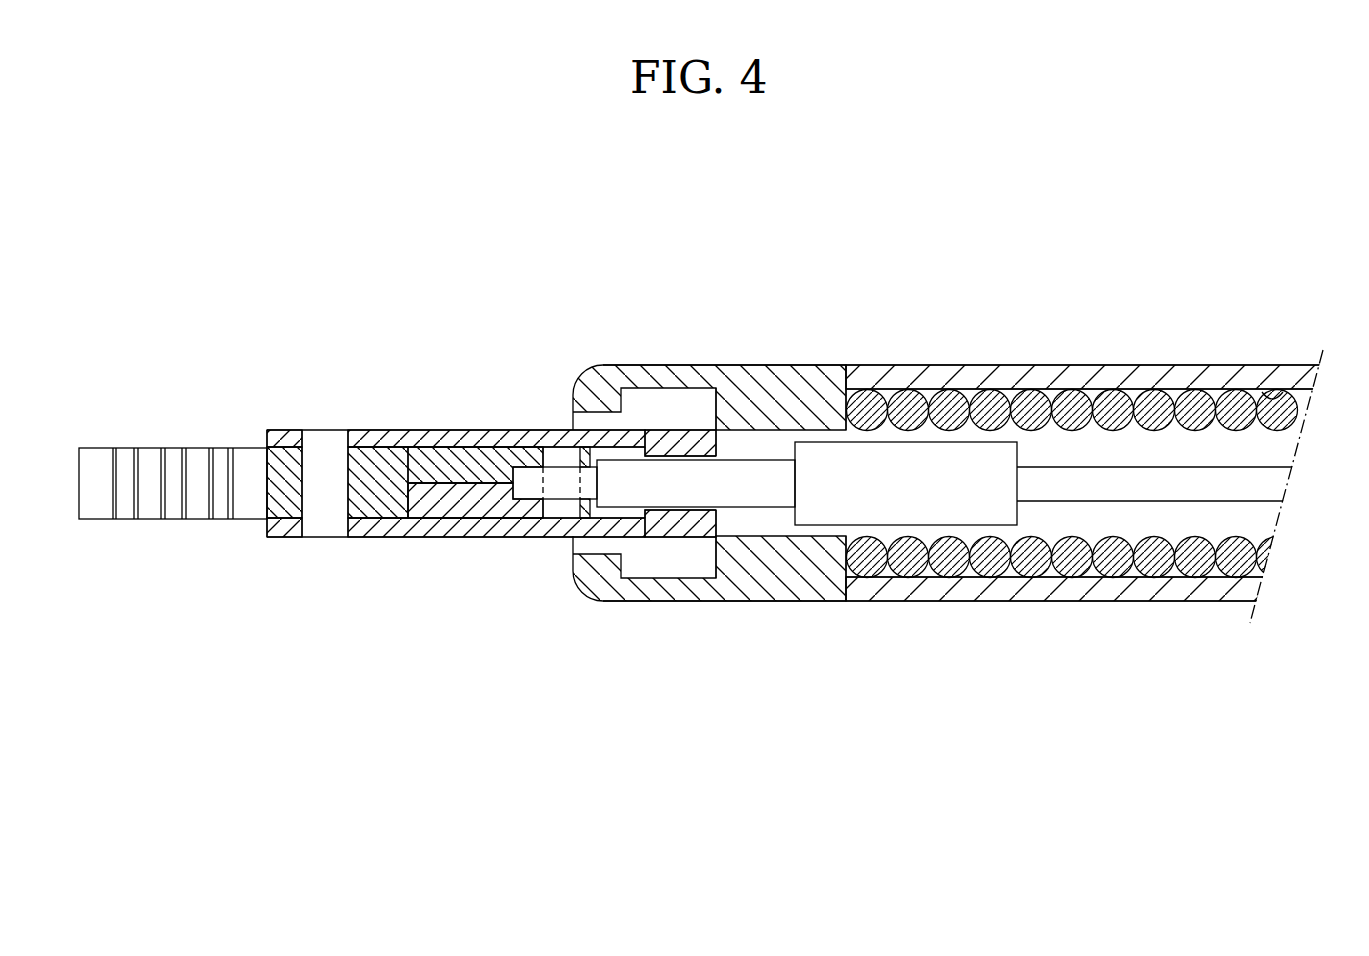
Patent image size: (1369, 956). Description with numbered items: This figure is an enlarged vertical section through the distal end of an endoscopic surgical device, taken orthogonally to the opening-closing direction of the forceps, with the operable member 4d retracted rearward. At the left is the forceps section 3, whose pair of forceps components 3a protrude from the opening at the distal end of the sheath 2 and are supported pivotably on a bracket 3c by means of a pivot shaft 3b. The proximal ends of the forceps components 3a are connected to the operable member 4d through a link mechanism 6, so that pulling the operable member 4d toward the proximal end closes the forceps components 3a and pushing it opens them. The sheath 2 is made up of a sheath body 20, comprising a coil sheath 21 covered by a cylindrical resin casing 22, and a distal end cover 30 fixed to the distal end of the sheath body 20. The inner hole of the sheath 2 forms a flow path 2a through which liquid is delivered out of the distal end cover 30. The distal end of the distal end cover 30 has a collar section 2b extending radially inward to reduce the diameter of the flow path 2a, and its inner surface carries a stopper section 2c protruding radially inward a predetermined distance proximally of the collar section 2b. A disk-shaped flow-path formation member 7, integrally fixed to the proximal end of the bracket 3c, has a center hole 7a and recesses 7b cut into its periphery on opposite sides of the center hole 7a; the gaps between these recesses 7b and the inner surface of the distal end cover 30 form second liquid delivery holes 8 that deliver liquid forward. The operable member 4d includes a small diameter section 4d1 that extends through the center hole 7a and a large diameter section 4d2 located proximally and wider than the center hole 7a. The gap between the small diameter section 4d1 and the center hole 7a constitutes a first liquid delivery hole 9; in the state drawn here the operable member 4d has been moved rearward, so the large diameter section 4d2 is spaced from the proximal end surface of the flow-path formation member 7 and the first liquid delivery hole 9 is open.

The sheath 2 is at (1246, 281).
The flow path 2a is at (1287, 365).
The collar section 2b is at (636, 388).
The stopper section 2c is at (714, 417).
The forceps section 3 is at (461, 324).
The forceps components 3a is at (145, 510).
The pivot shaft 3b is at (330, 445).
The bracket 3c is at (520, 428).
The operable member 4d is at (779, 532).
The small diameter section 4d1 is at (777, 458).
The large diameter section 4d2 is at (902, 441).
The link mechanism 6 is at (449, 577).
The flow-path formation member 7 is at (680, 557).
The center hole 7a is at (717, 456).
The recesses 7b is at (667, 432).
The second liquid delivery holes 8 is at (553, 551).
The first liquid delivery hole 9 is at (635, 525).
The sheath body 20 is at (1123, 345).
The coil sheath 21 is at (1032, 408).
The resin casing 22 is at (1177, 365).
The distal end cover 30 is at (817, 601).